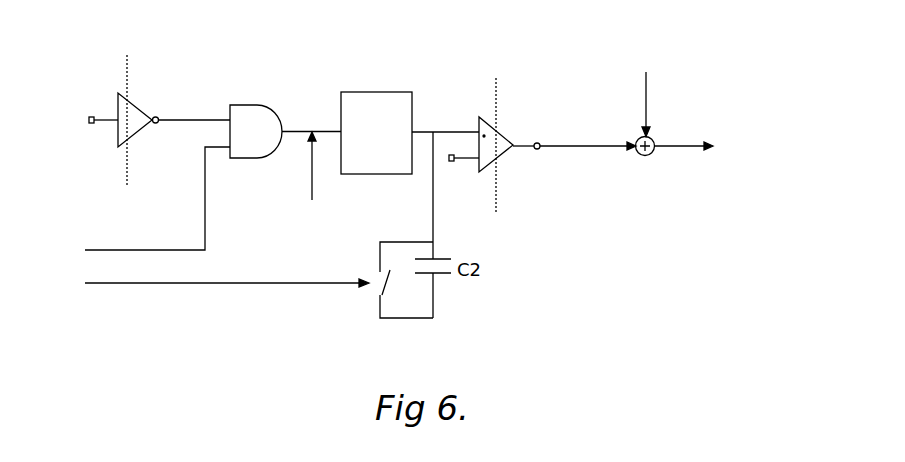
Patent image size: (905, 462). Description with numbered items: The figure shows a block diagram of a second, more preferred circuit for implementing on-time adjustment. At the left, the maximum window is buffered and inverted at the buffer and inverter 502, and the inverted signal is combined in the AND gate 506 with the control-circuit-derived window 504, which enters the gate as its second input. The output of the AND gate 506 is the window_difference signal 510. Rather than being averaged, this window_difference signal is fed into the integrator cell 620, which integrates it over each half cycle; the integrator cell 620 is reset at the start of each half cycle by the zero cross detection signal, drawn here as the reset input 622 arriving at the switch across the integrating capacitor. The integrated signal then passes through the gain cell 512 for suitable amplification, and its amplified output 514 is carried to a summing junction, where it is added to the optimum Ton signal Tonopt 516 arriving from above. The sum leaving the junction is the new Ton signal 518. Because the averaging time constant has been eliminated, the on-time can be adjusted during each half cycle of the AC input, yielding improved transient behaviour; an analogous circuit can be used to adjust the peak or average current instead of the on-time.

The buffer and inverter 502 is at (154, 120).
The control-circuit-derived window 504 is at (156, 199).
The AND gate 506 is at (273, 146).
The window_difference signal 510 is at (302, 183).
The gain cell 512 is at (495, 148).
The comparator output signal 514 is at (653, 155).
The optimum Ton signal Tonopt 516 is at (657, 93).
The new Ton signal 518 is at (700, 160).
The integrator cell 620 is at (378, 104).
The reset control signal 622 is at (225, 295).